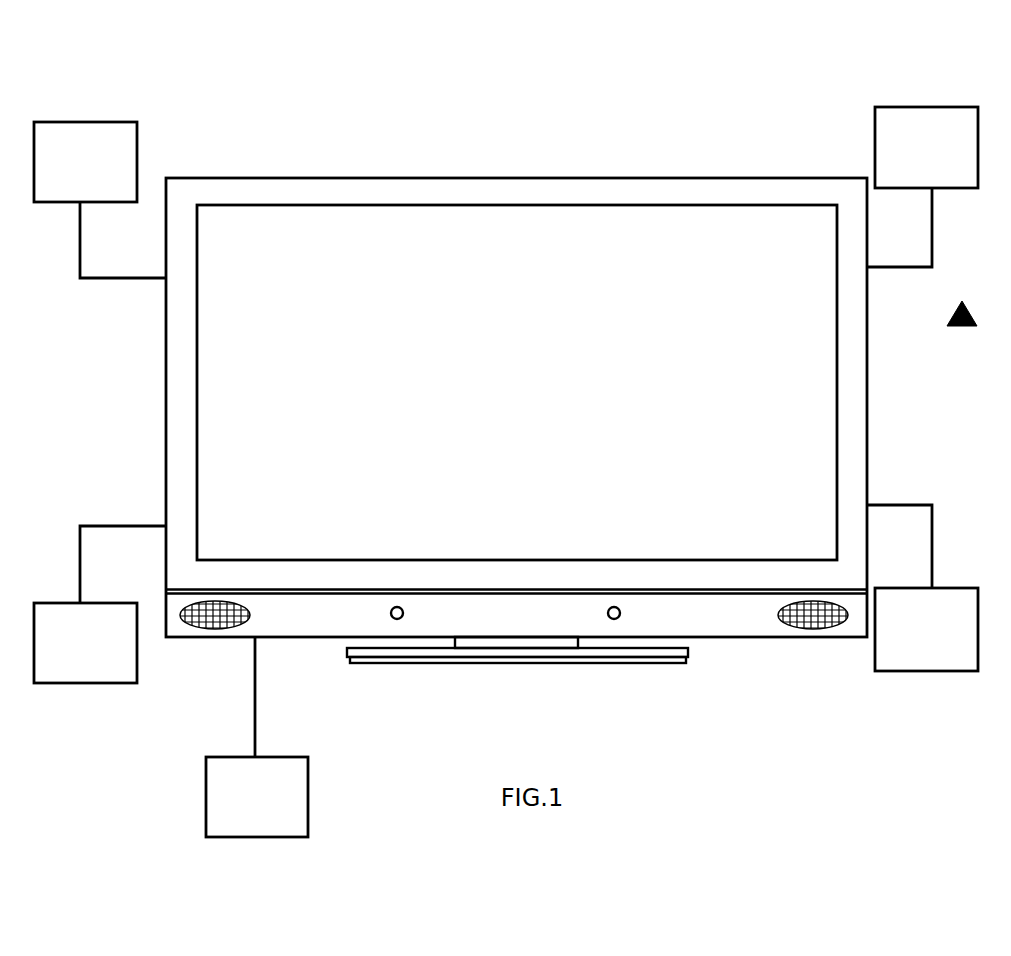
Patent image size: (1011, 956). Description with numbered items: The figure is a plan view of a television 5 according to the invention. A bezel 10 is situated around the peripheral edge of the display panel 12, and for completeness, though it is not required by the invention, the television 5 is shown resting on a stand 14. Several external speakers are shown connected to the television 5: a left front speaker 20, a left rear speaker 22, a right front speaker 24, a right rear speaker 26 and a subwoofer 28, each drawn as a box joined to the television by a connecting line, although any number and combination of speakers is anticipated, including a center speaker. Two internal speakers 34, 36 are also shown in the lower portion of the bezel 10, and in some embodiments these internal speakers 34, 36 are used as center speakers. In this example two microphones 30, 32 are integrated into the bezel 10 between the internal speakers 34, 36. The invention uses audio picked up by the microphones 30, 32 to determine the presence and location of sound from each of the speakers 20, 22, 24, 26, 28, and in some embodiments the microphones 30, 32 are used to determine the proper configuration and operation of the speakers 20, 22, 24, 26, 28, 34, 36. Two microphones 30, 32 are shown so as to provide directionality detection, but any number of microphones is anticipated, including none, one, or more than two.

The television 5 is at (972, 314).
The bezel 10 is at (492, 190).
The display panel 12 is at (803, 415).
The stand 14 is at (688, 650).
The left front speaker 20 is at (88, 122).
The left rear speaker 22 is at (98, 686).
The right front speaker 24 is at (912, 107).
The right rear speaker 26 is at (938, 672).
The subwoofer 28 is at (290, 838).
The microphone 30 is at (614, 606).
The microphone 32 is at (397, 606).
The internal speaker 34 is at (813, 630).
The internal speaker 36 is at (217, 632).